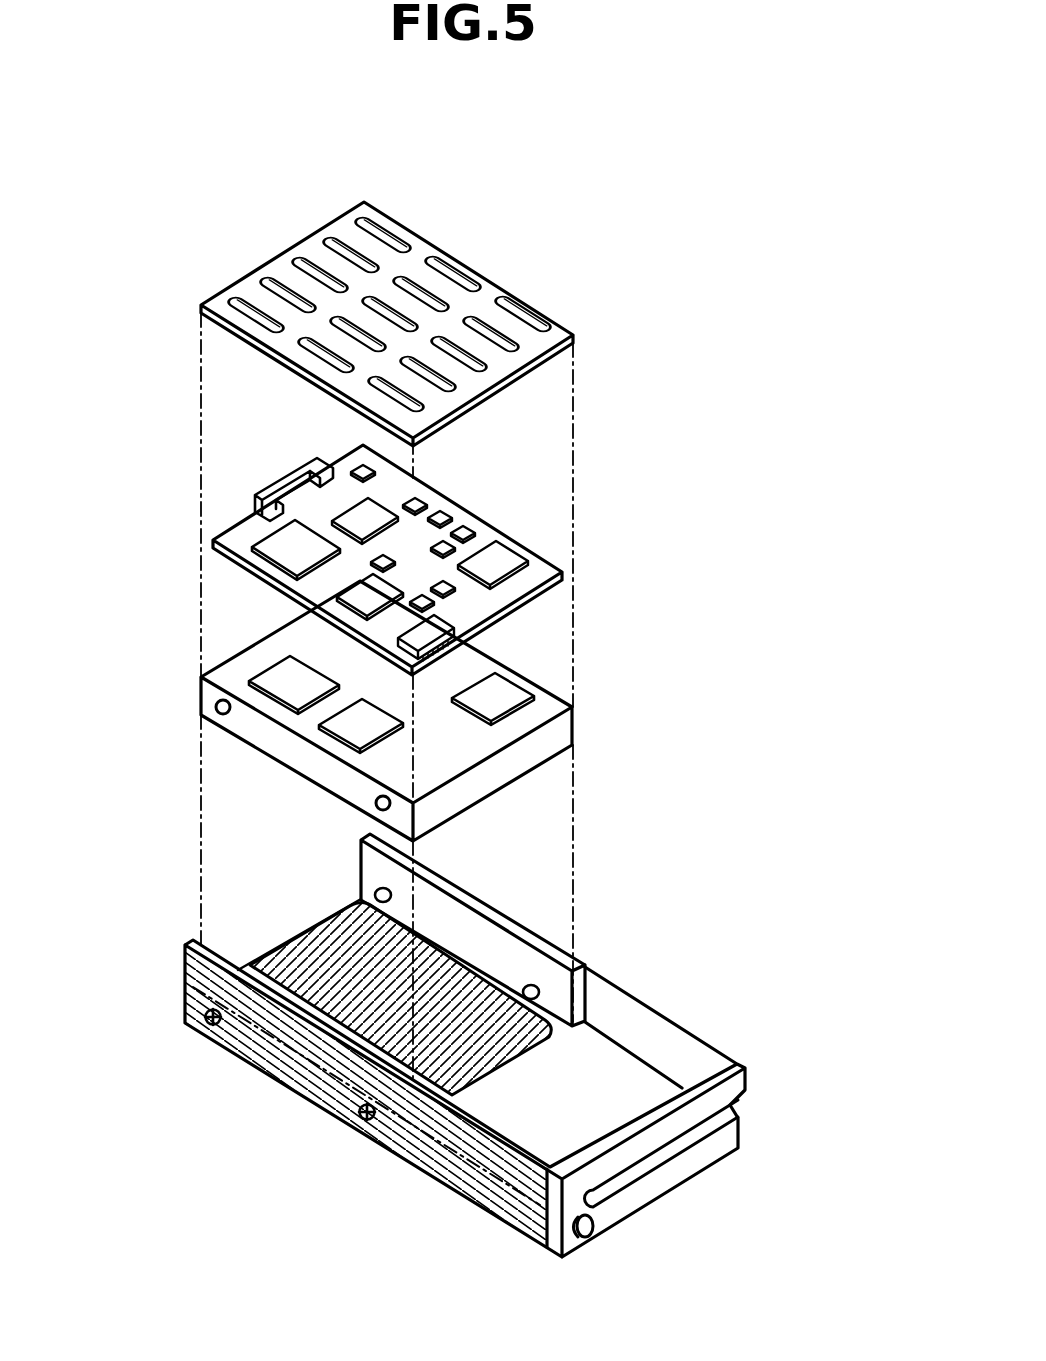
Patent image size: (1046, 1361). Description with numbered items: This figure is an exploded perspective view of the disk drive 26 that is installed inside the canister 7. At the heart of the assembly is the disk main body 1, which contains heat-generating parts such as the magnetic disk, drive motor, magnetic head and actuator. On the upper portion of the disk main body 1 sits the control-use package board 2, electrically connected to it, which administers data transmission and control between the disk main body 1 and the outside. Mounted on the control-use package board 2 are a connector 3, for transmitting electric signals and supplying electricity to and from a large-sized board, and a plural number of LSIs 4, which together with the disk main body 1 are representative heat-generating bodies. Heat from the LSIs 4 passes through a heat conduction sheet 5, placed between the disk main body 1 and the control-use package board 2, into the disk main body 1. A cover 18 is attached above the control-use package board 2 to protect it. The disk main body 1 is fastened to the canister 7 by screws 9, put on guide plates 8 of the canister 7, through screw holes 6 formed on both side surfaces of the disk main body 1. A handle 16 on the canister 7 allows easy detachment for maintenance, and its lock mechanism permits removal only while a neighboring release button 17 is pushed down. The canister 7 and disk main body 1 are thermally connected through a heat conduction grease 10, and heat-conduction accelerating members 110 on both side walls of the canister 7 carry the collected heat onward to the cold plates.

The disk drive 26 is at (687, 208).
The cover 18 is at (488, 293).
The connector 3 is at (255, 497).
The control-use package board 2 is at (545, 570).
The LSIs 4 is at (363, 603).
The heat conduction sheet 5 is at (498, 693).
The screw holes 6 is at (223, 709).
The disk main body 1 is at (533, 748).
The heat conduction grease 10 is at (590, 1002).
The heat-conduction accelerating members 110 is at (657, 1031).
The canister 7 is at (196, 962).
The guide plates 8 is at (460, 1180).
The screws 9 is at (367, 1120).
The handle 16 is at (736, 1087).
The release button 17 is at (593, 1226).